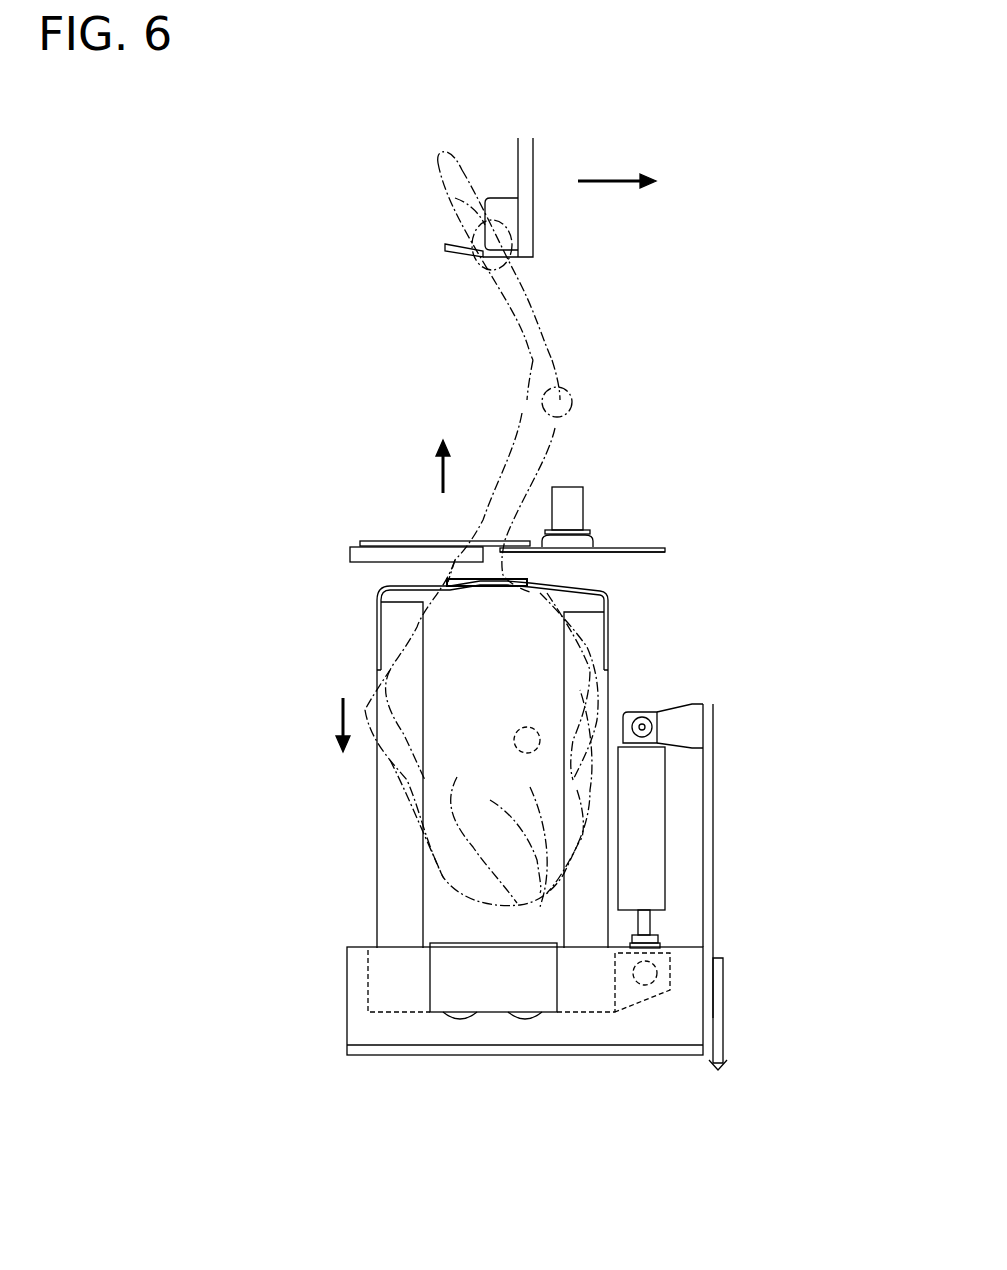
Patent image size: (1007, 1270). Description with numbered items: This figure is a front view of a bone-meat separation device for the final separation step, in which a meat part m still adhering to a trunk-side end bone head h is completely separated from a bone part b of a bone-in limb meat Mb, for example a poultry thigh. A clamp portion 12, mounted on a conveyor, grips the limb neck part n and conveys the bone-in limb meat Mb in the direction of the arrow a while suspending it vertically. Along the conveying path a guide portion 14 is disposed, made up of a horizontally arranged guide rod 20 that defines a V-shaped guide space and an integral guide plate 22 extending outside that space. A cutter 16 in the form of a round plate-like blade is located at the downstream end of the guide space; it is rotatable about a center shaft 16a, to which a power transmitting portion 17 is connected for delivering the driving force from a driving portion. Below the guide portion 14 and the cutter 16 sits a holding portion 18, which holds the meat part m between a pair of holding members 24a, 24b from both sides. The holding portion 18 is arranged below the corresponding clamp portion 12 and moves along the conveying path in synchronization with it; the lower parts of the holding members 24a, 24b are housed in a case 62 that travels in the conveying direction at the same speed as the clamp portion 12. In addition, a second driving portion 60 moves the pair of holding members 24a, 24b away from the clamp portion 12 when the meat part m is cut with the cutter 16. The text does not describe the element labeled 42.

The clamp portion 12 is at (533, 219).
The guide portion 14 is at (318, 545).
The cutter 16 is at (628, 547).
The center shaft 16a is at (583, 553).
The power transmitting portion 17 is at (583, 500).
The holding portion 18 is at (316, 703).
The guide rod 20 is at (348, 560).
The guide plate 22 is at (380, 540).
The holding member 24a is at (595, 622).
The holding member 24b is at (380, 647).
The cylinder actuator 42 is at (657, 854).
The second driving portion 60 is at (378, 973).
The case 62 is at (637, 1027).
The conveying direction arrow a is at (608, 180).
The bone part b is at (538, 330).
The trunk-side end bone head h is at (487, 530).
The meat part m is at (400, 778).
The bone-in limb meat Mb is at (500, 366).
The limb neck part n is at (450, 203).